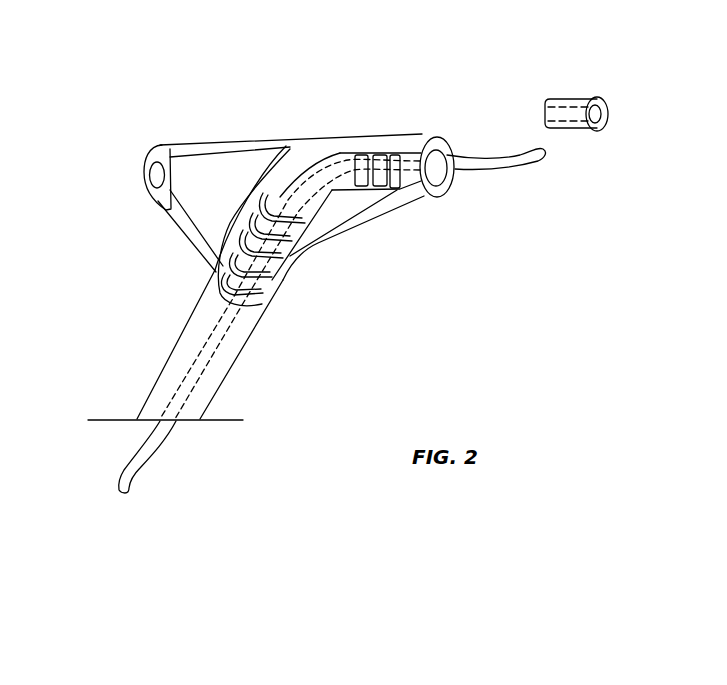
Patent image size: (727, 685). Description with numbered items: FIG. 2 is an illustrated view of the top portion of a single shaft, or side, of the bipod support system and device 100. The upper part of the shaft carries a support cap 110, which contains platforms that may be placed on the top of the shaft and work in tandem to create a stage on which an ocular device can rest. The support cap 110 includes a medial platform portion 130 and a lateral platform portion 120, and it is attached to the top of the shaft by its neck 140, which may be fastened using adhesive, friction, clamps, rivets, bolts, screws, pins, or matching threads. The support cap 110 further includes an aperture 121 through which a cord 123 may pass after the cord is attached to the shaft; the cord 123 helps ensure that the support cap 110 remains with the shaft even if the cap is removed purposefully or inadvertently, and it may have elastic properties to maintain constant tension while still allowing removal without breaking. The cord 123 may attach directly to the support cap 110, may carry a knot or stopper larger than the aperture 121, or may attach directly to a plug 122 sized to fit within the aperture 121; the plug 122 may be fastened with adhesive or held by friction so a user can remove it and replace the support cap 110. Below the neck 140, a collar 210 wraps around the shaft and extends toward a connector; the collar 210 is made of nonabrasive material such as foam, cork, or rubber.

The bipod support system and device 100 is at (208, 127).
The support cap 110 is at (310, 136).
The lateral platform portion 120 is at (405, 136).
The aperture 121 is at (445, 188).
The plug 122 is at (563, 96).
The cord 123 is at (517, 178).
The medial platform portion 130 is at (175, 141).
The neck 140 is at (210, 267).
The collar 210 is at (236, 361).